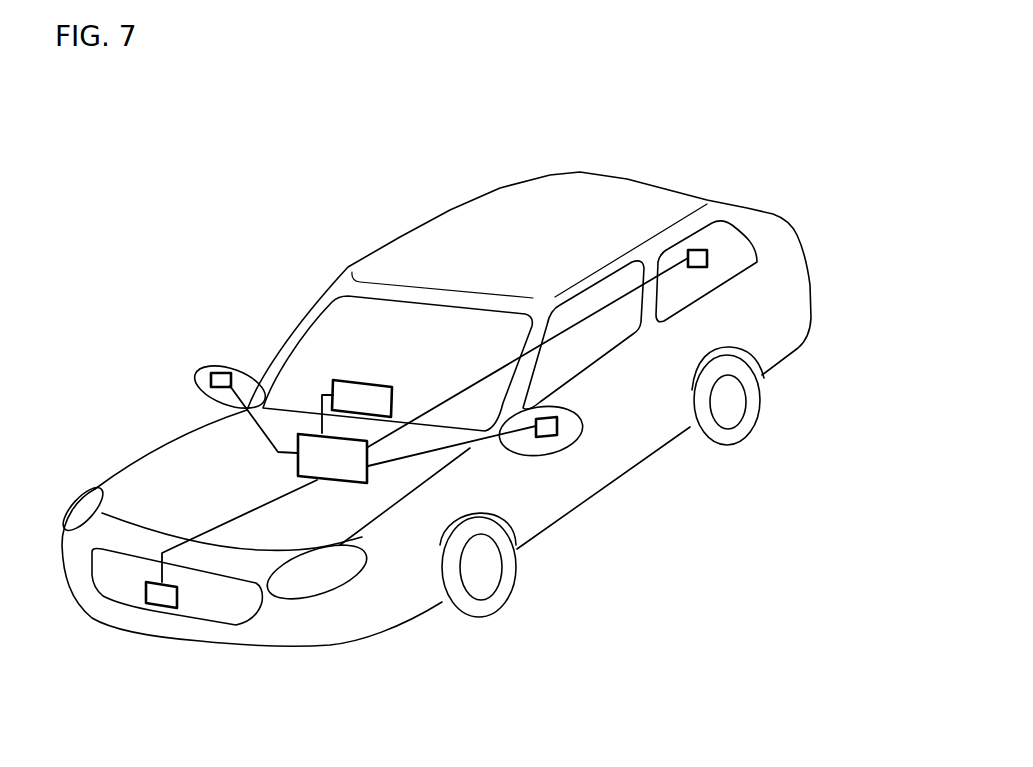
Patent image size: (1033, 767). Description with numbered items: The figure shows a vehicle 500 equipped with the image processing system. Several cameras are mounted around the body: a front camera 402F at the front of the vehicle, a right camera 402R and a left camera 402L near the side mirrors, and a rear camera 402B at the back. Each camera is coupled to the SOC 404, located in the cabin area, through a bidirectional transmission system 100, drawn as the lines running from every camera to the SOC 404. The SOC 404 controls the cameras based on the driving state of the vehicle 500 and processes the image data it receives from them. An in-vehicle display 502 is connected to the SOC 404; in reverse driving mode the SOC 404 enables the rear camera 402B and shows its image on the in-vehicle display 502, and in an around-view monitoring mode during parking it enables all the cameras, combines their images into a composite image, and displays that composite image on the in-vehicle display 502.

The vehicle 500 is at (792, 114).
The bidirectional transmission system 100 is at (452, 395).
The SOC 404 is at (336, 485).
The in-vehicle display 502 is at (372, 378).
The right camera 402R is at (220, 373).
The rear camera 402B is at (707, 256).
The left camera 402L is at (546, 438).
The front camera 402F is at (160, 598).